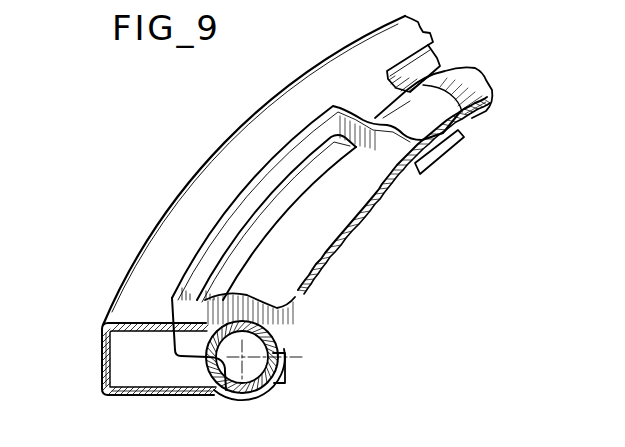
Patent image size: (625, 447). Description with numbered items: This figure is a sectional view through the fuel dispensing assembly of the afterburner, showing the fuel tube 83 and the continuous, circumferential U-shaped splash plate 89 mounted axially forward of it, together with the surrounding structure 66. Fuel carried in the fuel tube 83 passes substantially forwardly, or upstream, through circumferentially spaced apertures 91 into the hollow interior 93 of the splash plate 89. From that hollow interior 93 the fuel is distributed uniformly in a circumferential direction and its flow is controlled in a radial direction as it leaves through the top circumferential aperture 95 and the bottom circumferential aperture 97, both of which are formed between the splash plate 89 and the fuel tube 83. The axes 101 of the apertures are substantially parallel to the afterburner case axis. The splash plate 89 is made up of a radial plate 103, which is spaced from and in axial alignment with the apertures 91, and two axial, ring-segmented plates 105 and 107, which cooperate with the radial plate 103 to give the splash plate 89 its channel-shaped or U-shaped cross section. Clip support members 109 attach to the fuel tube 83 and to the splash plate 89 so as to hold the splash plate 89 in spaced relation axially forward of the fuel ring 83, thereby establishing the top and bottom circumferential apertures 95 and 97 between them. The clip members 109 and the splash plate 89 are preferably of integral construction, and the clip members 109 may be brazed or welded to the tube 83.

The arm 66 is at (271, 162).
The fuel tube 83 is at (360, 192).
The splash plate 89 is at (126, 403).
The apertures 91 is at (225, 370).
The hollow interior 93 is at (124, 376).
The circumferential aperture 95 is at (296, 183).
The circumferential aperture 97 is at (186, 348).
The axes of apertures 101 is at (292, 357).
The radial plate 103 is at (100, 347).
The axial ring-segmented plate 105 is at (140, 283).
The axial ring-segmented plate 107 is at (182, 396).
The clip support member 109 is at (443, 100).